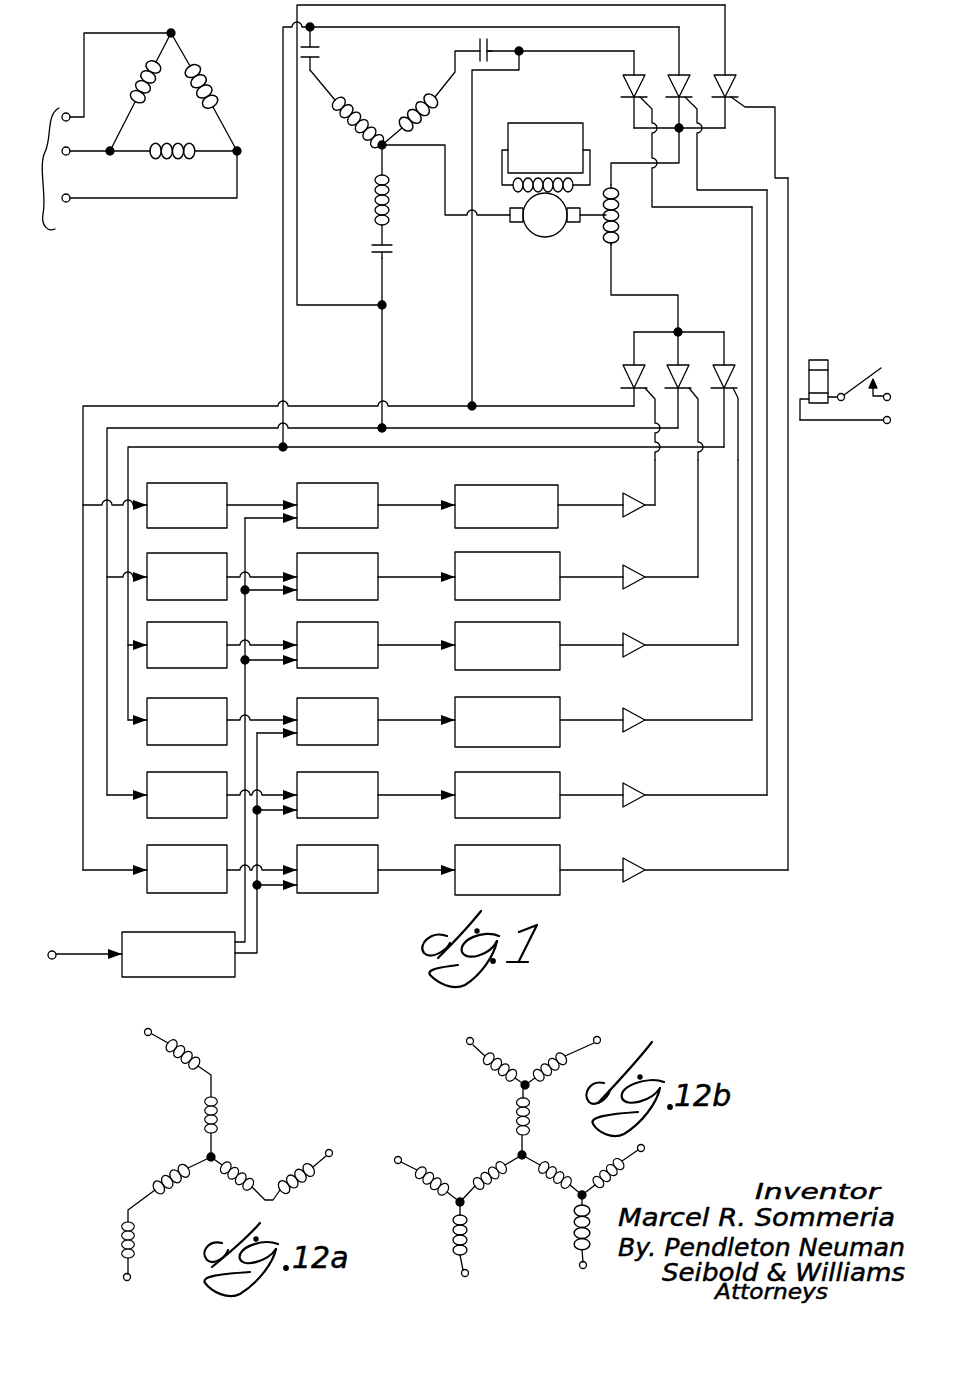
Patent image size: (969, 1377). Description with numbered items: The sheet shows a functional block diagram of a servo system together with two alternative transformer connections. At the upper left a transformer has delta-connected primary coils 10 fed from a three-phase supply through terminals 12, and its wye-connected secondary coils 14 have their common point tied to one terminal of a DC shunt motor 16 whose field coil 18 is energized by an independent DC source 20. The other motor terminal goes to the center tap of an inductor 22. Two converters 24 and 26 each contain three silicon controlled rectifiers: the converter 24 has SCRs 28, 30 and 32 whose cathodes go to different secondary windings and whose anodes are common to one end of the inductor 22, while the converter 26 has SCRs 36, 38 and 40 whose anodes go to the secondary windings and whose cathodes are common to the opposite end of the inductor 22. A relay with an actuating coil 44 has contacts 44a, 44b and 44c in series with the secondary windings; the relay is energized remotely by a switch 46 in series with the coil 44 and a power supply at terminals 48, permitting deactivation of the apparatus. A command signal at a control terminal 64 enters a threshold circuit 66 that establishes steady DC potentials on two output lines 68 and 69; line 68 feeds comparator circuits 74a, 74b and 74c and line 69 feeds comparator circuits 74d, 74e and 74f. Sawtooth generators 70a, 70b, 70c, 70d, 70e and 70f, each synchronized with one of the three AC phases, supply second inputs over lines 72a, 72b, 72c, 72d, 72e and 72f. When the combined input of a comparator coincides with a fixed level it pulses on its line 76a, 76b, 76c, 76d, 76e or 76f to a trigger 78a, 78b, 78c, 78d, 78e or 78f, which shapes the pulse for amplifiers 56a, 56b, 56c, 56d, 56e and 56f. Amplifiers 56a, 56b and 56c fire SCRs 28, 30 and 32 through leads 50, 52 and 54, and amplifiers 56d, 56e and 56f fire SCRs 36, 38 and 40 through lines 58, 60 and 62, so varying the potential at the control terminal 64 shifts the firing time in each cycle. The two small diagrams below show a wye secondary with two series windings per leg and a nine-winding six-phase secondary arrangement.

The primary coils 10 is at (180, 123).
The terminals 12 is at (139, 140).
The secondary coils 14 is at (422, 188).
The motor 16 is at (546, 238).
The field coil 18 is at (514, 192).
The DC source 20 is at (523, 123).
The inductor 22 is at (619, 239).
The converter 24 is at (661, 396).
The converter 26 is at (699, 106).
The SCR 28 is at (627, 366).
The SCR 30 is at (672, 366).
The SCR 32 is at (719, 366).
The SCR 36 is at (639, 76).
The SCR 38 is at (684, 76).
The SCR 40 is at (731, 75).
The actuating coil 44 is at (824, 360).
The relay contact 44a is at (322, 52).
The relay contact 44b is at (373, 250).
The relay contact 44c is at (478, 40).
The switch 46 is at (858, 379).
The terminals 48 is at (895, 425).
The lead 50 is at (655, 482).
The lead 52 is at (698, 505).
The lead 54 is at (718, 641).
The amplifier 56a is at (633, 519).
The amplifier 56b is at (633, 591).
The amplifier 56c is at (634, 659).
The amplifier 56d is at (636, 733).
The amplifier 56e is at (636, 808).
The amplifier 56f is at (636, 883).
The line 58 is at (752, 262).
The line 60 is at (767, 228).
The line 62 is at (788, 212).
The control terminal 64 is at (82, 934).
The threshold circuit 66 is at (138, 978).
The output line 68 is at (245, 915).
The output line 69 is at (257, 921).
The sawtooth generator 70a is at (228, 483).
The sawtooth generator 70b is at (187, 576).
The sawtooth generator 70c is at (187, 645).
The sawtooth generator 70d is at (187, 721).
The sawtooth generator 70e is at (187, 795).
The sawtooth generator 70f is at (187, 869).
The line 72a is at (244, 506).
The line 72b is at (264, 580).
The line 72c is at (260, 648).
The line 72d is at (262, 718).
The line 72e is at (274, 795).
The line 72f is at (280, 865).
The comparator circuit 74a is at (377, 483).
The comparator circuit 74b is at (337, 576).
The comparator circuit 74c is at (337, 645).
The comparator circuit 74d is at (337, 721).
The comparator circuit 74e is at (337, 795).
The comparator circuit 74f is at (337, 869).
The line 76a is at (391, 511).
The line 76b is at (391, 582).
The line 76c is at (391, 650).
The line 76d is at (389, 726).
The line 76e is at (394, 801).
The line 76f is at (394, 876).
The trigger 78a is at (540, 485).
The trigger 78b is at (507, 576).
The trigger 78c is at (507, 646).
The trigger 78d is at (507, 722).
The trigger 78e is at (507, 795).
The trigger 78f is at (507, 870).